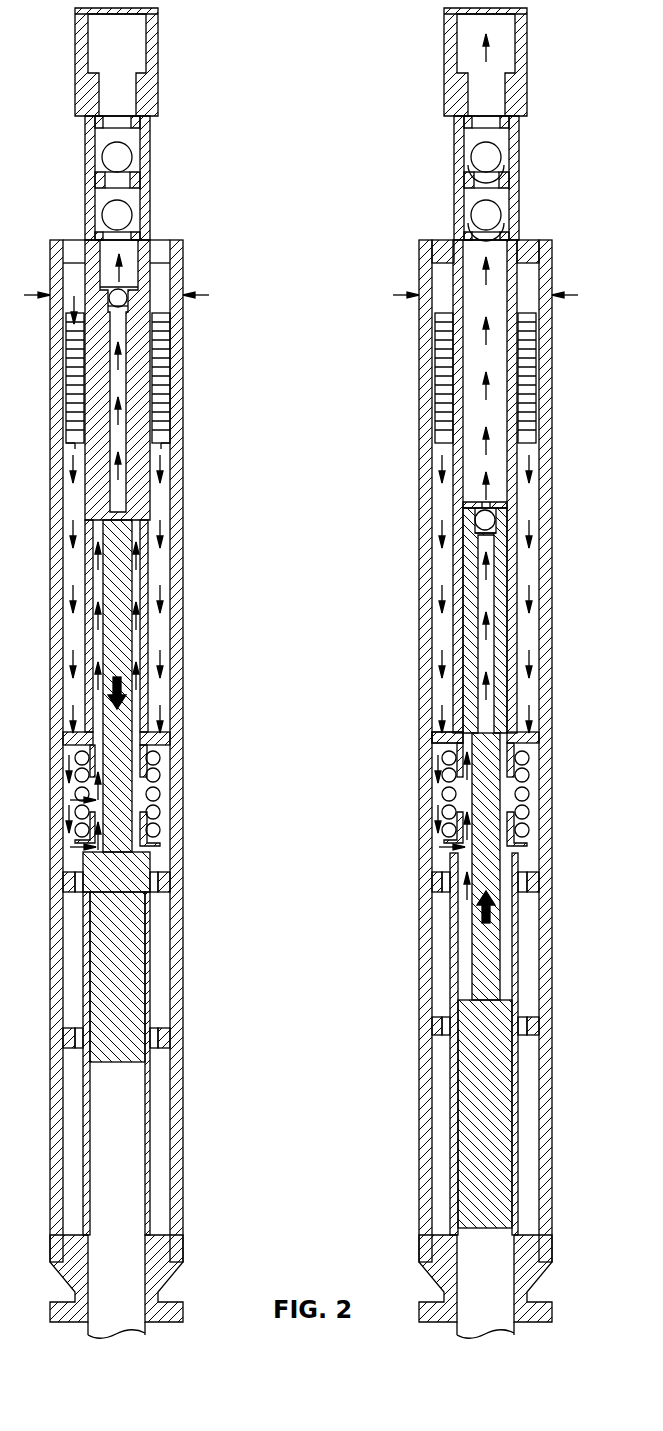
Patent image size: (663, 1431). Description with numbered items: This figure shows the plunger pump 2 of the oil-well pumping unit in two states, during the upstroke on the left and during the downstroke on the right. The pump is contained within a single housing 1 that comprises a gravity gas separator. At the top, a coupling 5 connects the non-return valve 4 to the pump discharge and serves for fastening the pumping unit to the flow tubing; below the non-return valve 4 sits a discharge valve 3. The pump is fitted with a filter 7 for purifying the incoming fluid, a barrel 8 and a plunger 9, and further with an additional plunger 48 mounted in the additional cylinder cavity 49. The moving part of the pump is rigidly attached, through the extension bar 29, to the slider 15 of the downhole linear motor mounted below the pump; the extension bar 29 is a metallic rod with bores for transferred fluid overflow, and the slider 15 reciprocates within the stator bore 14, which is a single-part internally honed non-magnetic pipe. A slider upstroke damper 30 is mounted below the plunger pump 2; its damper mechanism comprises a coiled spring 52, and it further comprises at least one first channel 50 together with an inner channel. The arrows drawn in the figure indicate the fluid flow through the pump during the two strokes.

The housing 1 is at (178, 477).
The plunger pump 2 is at (170, 1258).
The discharge valve 3 is at (148, 292).
The non-return valve 4 is at (126, 158).
The coupling 5 is at (155, 95).
The filter 7 is at (158, 387).
The barrel 8 is at (140, 520).
The plunger 9 is at (130, 348).
The stator bore 14 is at (148, 1153).
The slider 15 is at (128, 1300).
The extension bar 29 is at (122, 598).
The slider upstroke damper 30 is at (147, 828).
The additional plunger 48 is at (128, 990).
The additional cylinder cavity 49 is at (148, 917).
The first channel 50 is at (432, 738).
The coiled spring 52 is at (155, 777).